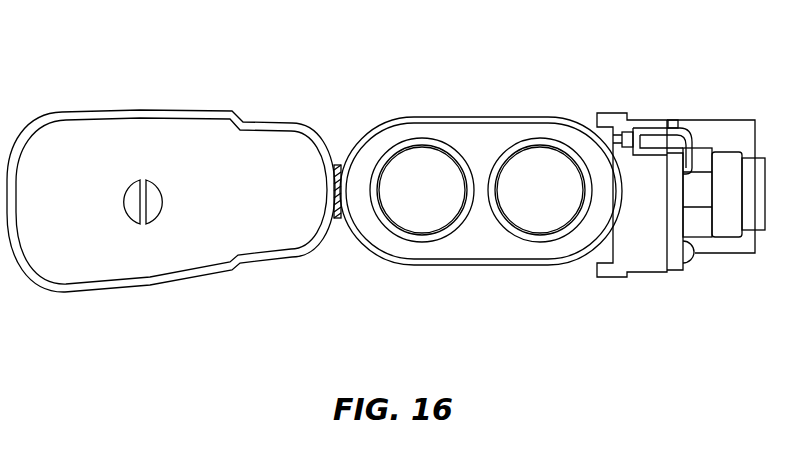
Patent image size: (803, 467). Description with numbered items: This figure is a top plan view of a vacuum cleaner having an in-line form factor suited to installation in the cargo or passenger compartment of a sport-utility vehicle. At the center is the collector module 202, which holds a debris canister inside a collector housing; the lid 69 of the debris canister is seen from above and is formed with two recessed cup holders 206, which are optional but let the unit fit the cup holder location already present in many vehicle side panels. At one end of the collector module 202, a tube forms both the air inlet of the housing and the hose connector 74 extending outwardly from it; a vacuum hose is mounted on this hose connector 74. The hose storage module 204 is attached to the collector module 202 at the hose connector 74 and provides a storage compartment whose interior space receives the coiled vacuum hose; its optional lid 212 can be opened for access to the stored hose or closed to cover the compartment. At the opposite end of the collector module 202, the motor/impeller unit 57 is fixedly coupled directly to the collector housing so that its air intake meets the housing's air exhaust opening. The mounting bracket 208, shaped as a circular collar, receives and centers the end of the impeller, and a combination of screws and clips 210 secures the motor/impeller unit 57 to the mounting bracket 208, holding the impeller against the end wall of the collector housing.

The hose storage module 204 is at (143, 105).
The lid 212 is at (137, 253).
The hose connector 74 is at (343, 218).
The collector module 202 is at (498, 112).
The recessed cup holders 206 is at (420, 220).
The lid 69 is at (483, 220).
The mounting bracket 208 is at (617, 113).
The clips 210 is at (677, 120).
The motor/impeller unit 57 is at (714, 115).